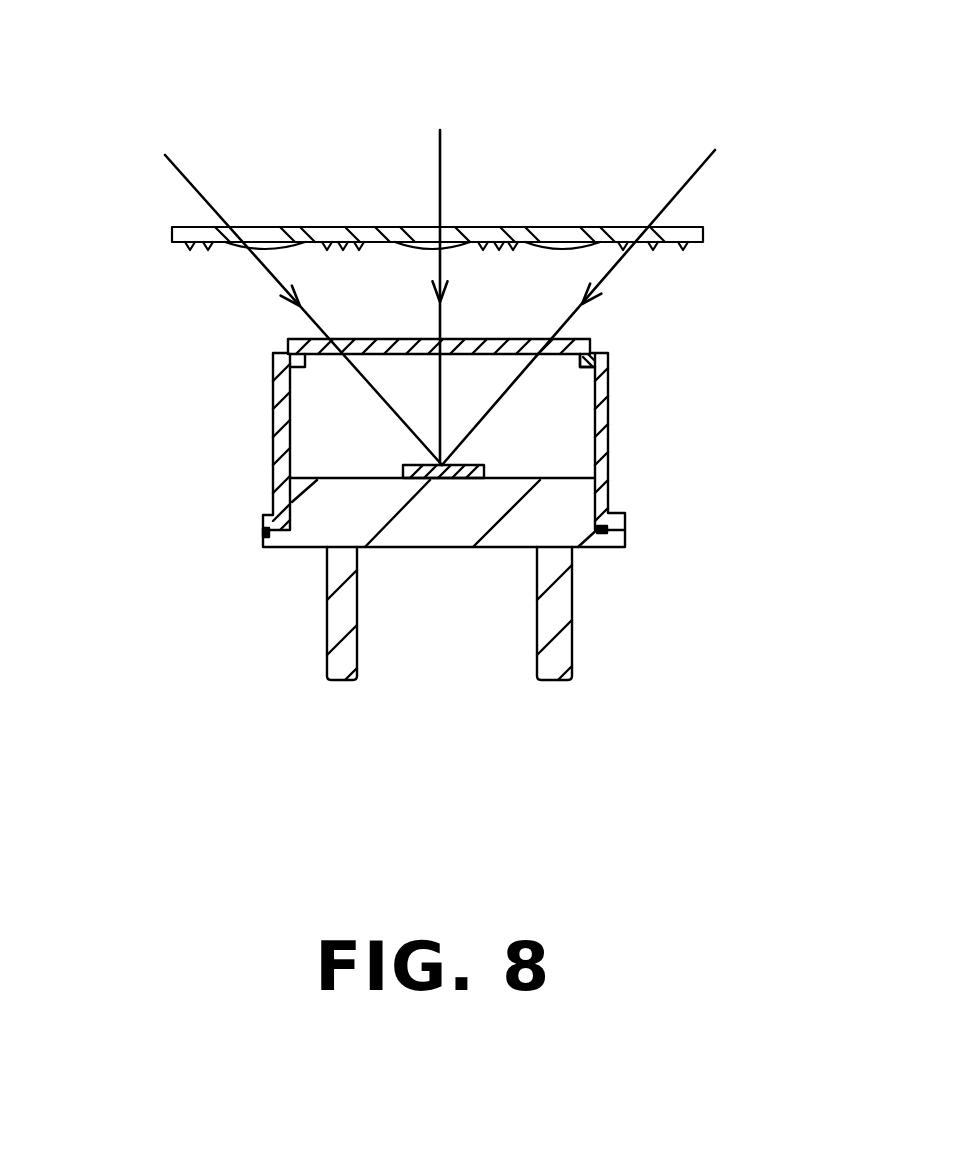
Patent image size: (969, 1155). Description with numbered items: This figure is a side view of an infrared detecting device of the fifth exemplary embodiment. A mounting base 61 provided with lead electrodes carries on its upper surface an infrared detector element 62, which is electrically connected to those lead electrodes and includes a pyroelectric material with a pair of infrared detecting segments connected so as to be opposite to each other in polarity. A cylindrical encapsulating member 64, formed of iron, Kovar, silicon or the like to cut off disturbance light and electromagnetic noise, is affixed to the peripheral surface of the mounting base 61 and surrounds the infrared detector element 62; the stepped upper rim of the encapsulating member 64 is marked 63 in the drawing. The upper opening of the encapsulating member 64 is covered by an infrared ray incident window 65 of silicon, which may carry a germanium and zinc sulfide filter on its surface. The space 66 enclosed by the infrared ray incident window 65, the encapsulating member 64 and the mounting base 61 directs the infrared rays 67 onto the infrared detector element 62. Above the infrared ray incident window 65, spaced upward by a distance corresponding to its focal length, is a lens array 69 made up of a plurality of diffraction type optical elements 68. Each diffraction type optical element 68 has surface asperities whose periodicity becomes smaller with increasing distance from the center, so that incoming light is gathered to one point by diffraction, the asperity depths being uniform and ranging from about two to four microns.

The mounting base 61 is at (602, 555).
The infrared detector element 62 is at (460, 480).
The stepped ledge of housing 63 is at (562, 368).
The encapsulating member 64 is at (606, 390).
The infrared ray incident window 65 is at (380, 342).
The space 66 is at (397, 383).
The infrared rays 67 is at (675, 197).
The diffraction type optical element 68 is at (198, 248).
The lens array 69 is at (703, 232).